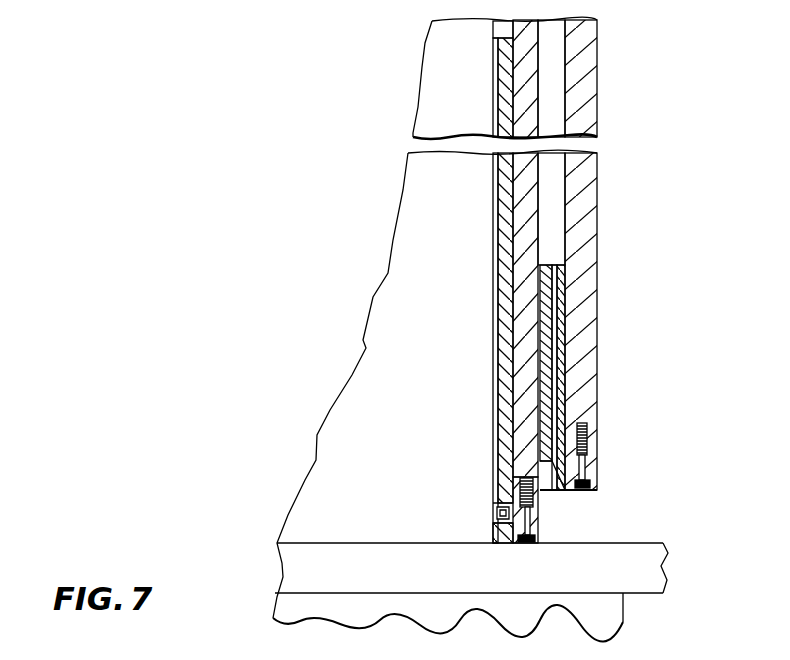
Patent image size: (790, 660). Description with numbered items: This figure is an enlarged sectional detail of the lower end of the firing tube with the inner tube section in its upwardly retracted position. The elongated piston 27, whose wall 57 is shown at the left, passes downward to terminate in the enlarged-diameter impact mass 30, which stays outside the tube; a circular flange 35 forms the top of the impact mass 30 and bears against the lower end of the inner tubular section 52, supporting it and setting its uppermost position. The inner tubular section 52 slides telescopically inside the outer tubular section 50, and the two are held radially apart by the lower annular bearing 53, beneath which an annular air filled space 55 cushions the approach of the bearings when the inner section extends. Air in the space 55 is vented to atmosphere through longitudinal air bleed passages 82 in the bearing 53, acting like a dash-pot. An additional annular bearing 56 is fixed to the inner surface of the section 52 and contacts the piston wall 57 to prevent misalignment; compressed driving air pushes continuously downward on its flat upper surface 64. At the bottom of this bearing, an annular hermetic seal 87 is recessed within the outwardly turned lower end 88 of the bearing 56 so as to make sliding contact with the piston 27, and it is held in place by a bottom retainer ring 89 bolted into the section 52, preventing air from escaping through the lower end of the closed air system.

The piston 27 is at (400, 279).
The impact mass 30 is at (624, 605).
The circular flange 35 is at (627, 560).
The outer tubular section 50 is at (597, 228).
The inner tubular section 52 is at (523, 80).
The lower annular bearing 53 is at (560, 300).
The annular air filled space 55 is at (550, 110).
The annular bearing 56 is at (500, 428).
The wall of piston 57 is at (496, 400).
The flat upper surface of bearing 64 is at (504, 33).
The air bleed passages 82 is at (555, 372).
The annular hermetic seal 87 is at (497, 512).
The outwardly turned lower end of bearing 88 is at (540, 513).
The bottom retainer ring 89 is at (537, 535).